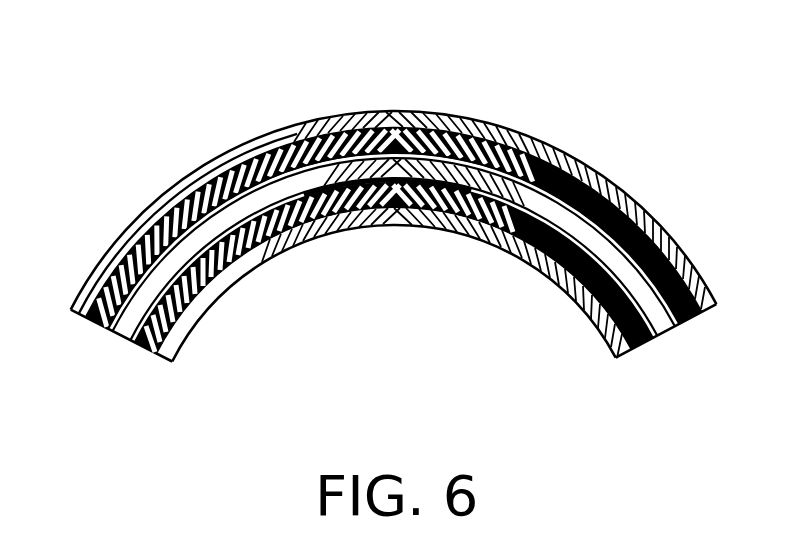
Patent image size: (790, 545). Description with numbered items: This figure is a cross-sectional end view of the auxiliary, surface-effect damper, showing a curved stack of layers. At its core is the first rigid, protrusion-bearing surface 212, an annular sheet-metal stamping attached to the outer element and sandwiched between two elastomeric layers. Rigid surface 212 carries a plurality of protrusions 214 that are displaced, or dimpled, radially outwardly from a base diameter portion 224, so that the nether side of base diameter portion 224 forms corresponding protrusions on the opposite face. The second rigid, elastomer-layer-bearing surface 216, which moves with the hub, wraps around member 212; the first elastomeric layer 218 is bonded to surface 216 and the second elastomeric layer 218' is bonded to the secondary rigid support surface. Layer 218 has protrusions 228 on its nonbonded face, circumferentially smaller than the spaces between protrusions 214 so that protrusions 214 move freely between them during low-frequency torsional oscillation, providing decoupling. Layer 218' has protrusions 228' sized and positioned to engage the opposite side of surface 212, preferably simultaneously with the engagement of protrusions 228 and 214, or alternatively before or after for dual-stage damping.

The first rigid, protrusion-bearing surface 212 is at (315, 222).
The protrusions 214 is at (373, 114).
The second rigid, elastomer-layer-bearing rigid surface 216 is at (586, 166).
The first elastomeric layer 218 is at (394, 193).
The second elastomeric layer 218' is at (394, 271).
The base diameter portion 224 is at (460, 168).
The protrusions 228 is at (316, 227).
The protrusions 228' is at (329, 268).